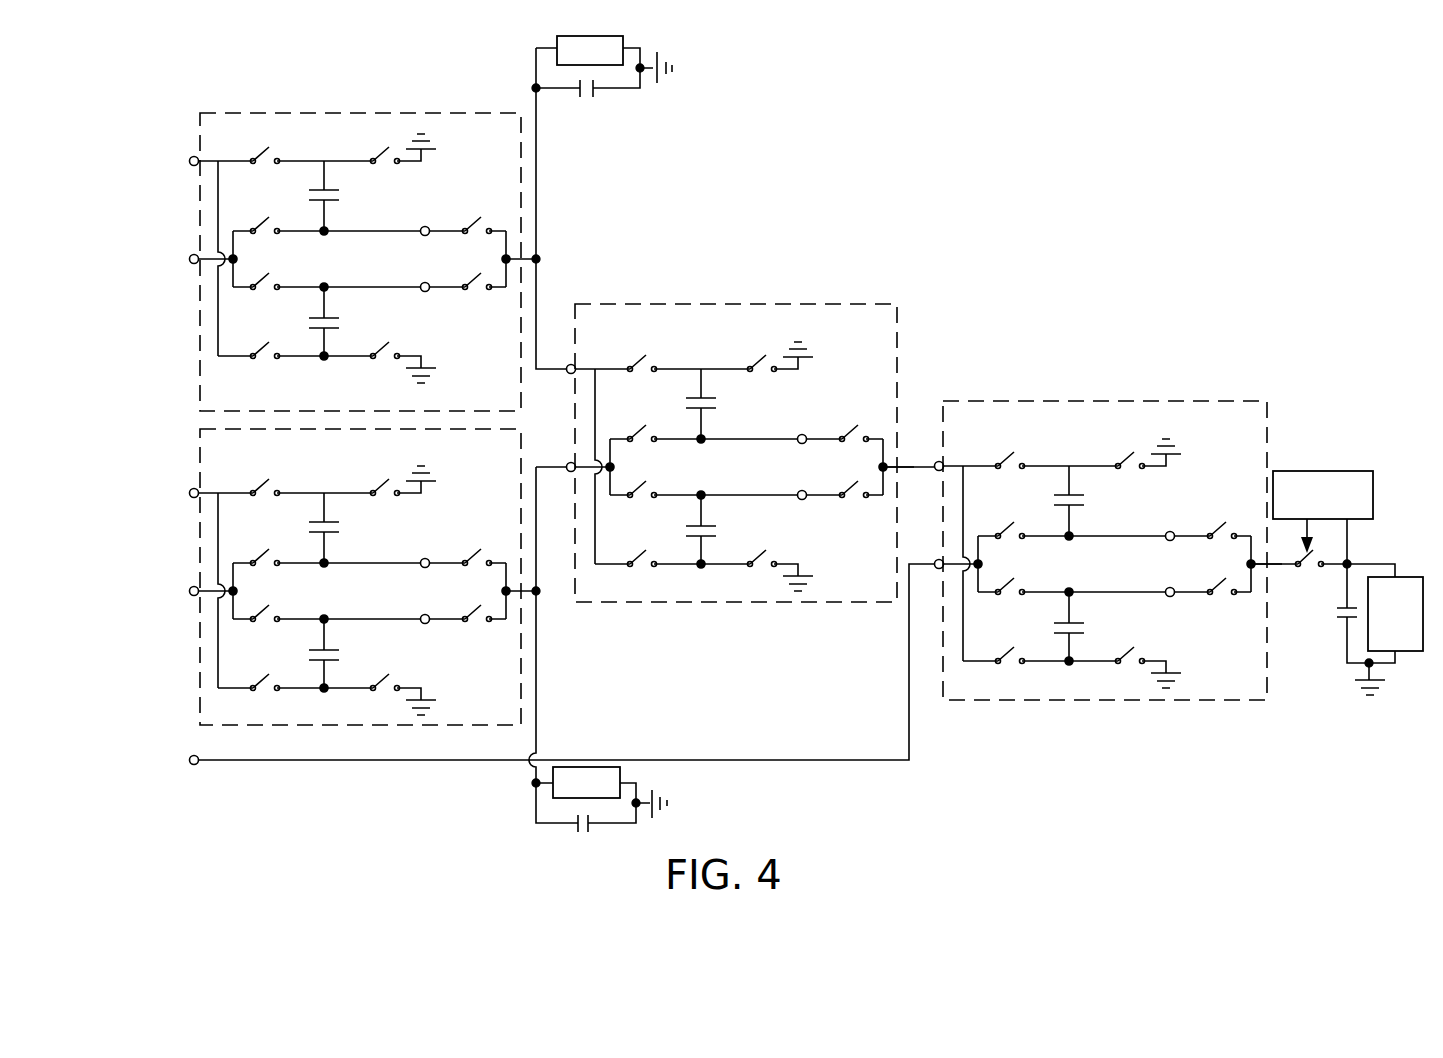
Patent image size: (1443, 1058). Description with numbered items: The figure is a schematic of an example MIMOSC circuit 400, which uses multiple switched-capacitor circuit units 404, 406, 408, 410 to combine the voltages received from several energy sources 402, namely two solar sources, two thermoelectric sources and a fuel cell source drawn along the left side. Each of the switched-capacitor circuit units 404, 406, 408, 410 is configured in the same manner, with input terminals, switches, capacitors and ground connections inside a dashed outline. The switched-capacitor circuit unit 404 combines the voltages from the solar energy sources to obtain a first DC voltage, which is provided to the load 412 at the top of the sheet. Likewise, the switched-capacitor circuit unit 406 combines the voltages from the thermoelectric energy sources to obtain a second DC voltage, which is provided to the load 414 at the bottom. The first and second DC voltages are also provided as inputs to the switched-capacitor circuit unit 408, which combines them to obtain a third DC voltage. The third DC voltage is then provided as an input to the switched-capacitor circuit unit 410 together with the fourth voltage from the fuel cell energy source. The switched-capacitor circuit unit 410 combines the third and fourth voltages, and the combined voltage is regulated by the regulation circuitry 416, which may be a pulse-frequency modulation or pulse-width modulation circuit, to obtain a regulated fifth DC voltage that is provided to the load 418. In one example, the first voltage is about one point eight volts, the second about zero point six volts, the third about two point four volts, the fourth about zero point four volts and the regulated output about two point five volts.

The MIMOSC circuit 400 is at (1058, 203).
The energy sources 402 is at (113, 96).
The switched-capacitor circuit unit 404 is at (316, 112).
The switched-capacitor circuit unit 406 is at (338, 730).
The switched-capacitor circuit unit 408 is at (828, 303).
The switched-capacitor circuit unit 410 is at (1172, 400).
The load 412 is at (556, 40).
The load 414 is at (580, 767).
The regulation circuitry 416 is at (1320, 470).
The load 418 is at (1400, 577).